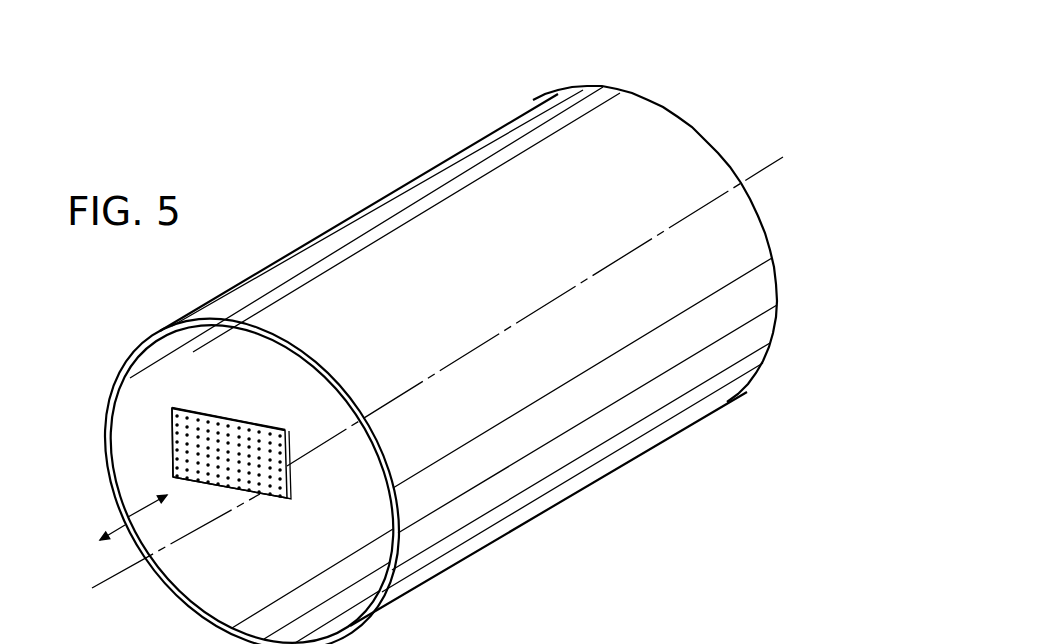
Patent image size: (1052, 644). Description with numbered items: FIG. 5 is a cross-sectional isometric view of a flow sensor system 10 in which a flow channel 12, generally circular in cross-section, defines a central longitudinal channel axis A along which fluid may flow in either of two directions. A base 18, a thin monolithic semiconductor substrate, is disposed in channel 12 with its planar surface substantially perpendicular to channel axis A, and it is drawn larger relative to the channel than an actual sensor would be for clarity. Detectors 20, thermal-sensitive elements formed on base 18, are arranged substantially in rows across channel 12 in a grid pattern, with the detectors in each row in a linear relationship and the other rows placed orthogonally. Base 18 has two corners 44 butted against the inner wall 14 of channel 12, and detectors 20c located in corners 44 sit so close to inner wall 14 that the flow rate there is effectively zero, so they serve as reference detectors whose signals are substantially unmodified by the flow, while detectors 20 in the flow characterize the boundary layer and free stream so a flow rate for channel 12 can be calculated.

The flow sensor system 10 is at (108, 353).
The flow channel 12 is at (241, 313).
The inner wall 14 is at (128, 436).
The base 18 is at (249, 493).
The detectors 20 is at (208, 414).
The reference detectors 20c is at (172, 409).
The corners 44 is at (172, 407).
The channel axis A is at (489, 340).